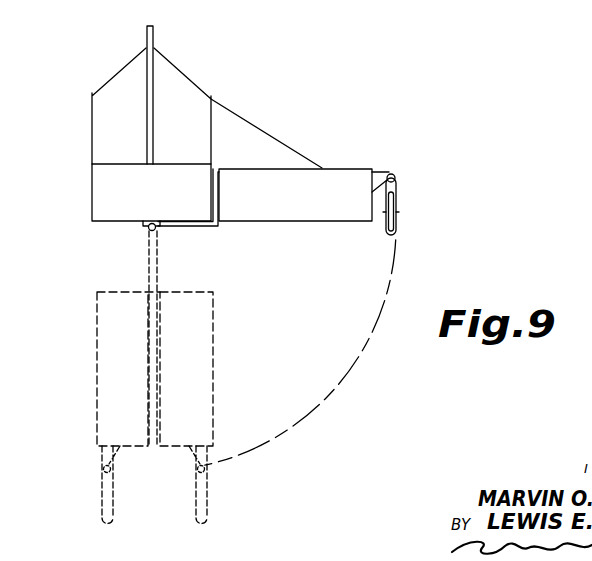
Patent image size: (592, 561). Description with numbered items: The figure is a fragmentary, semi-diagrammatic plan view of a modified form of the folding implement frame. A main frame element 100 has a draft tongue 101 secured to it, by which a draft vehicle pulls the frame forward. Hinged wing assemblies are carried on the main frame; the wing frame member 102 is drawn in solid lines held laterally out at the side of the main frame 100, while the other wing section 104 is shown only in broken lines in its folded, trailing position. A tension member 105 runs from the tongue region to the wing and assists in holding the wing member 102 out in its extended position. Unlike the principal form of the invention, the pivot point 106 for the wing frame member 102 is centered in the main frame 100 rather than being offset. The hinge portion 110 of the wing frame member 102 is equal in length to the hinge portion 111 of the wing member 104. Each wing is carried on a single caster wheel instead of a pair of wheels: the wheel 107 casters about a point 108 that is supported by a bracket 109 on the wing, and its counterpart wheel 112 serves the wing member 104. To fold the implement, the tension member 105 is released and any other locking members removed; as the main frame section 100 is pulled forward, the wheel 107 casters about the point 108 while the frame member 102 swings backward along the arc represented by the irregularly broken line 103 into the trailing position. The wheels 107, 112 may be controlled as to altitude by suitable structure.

The main frame element 100 is at (113, 170).
The draft tongue 101 is at (154, 107).
The wing frame member 102 is at (294, 207).
The irregularly broken line 103 is at (349, 378).
The wing section 104 is at (97, 351).
The tension member 105 is at (255, 125).
The pivot point 106 is at (155, 220).
The wheel 107 is at (397, 223).
The caster point 108 is at (395, 176).
The bracket 109 is at (375, 173).
The hinge portion 110 is at (158, 269).
The hinge portion 111 is at (149, 256).
The wheel 112 is at (102, 518).